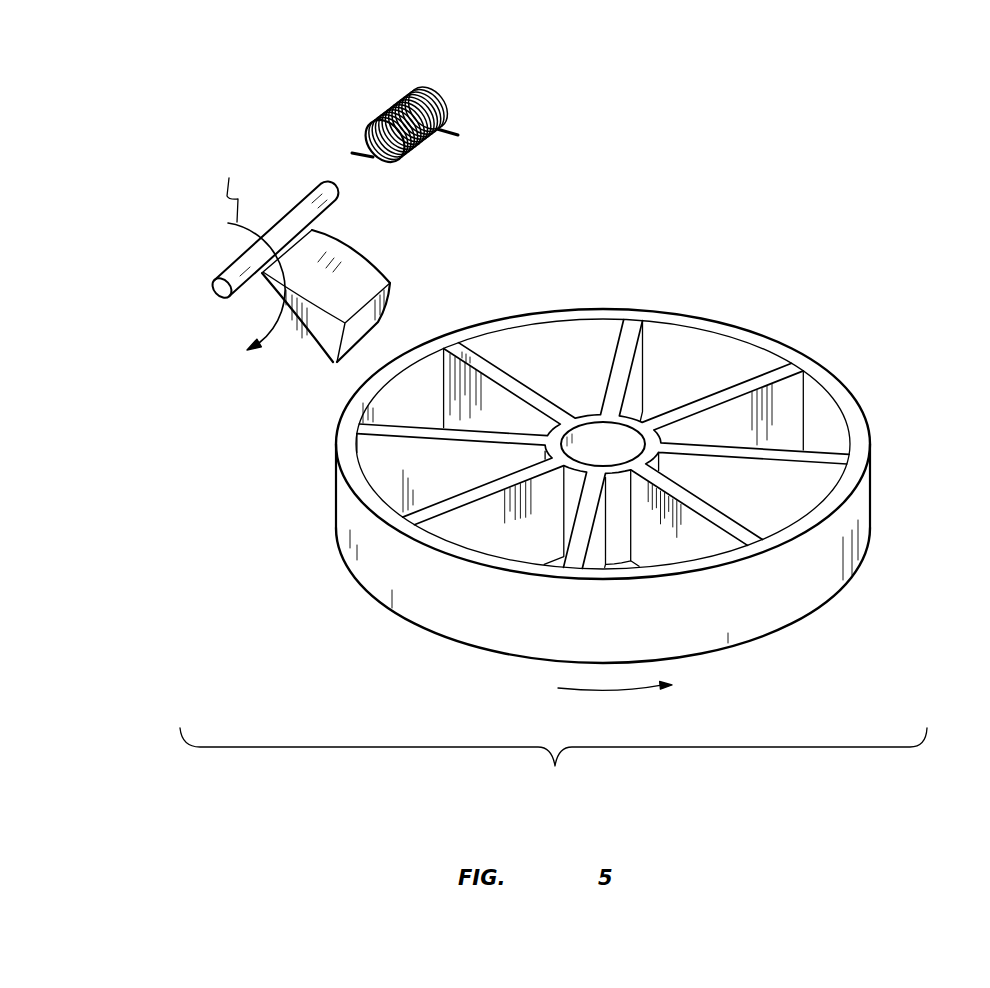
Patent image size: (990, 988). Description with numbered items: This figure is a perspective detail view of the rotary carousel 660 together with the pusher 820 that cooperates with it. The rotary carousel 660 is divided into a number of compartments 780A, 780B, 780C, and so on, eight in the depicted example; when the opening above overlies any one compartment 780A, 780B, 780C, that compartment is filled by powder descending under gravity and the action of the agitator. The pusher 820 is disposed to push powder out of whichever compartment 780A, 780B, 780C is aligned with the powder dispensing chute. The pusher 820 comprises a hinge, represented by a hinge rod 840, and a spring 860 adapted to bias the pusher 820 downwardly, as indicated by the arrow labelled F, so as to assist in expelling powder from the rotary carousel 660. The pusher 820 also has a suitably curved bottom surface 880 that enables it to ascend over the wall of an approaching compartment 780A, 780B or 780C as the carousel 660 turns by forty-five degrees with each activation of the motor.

The rotary carousel 660 is at (678, 240).
The compartment 780A is at (535, 330).
The compartment 780B is at (692, 333).
The compartment 780C is at (826, 402).
The pusher 820 is at (188, 160).
The hinge rod 840 is at (322, 180).
The spring 860 is at (437, 93).
The curved bottom surface 880 is at (393, 300).